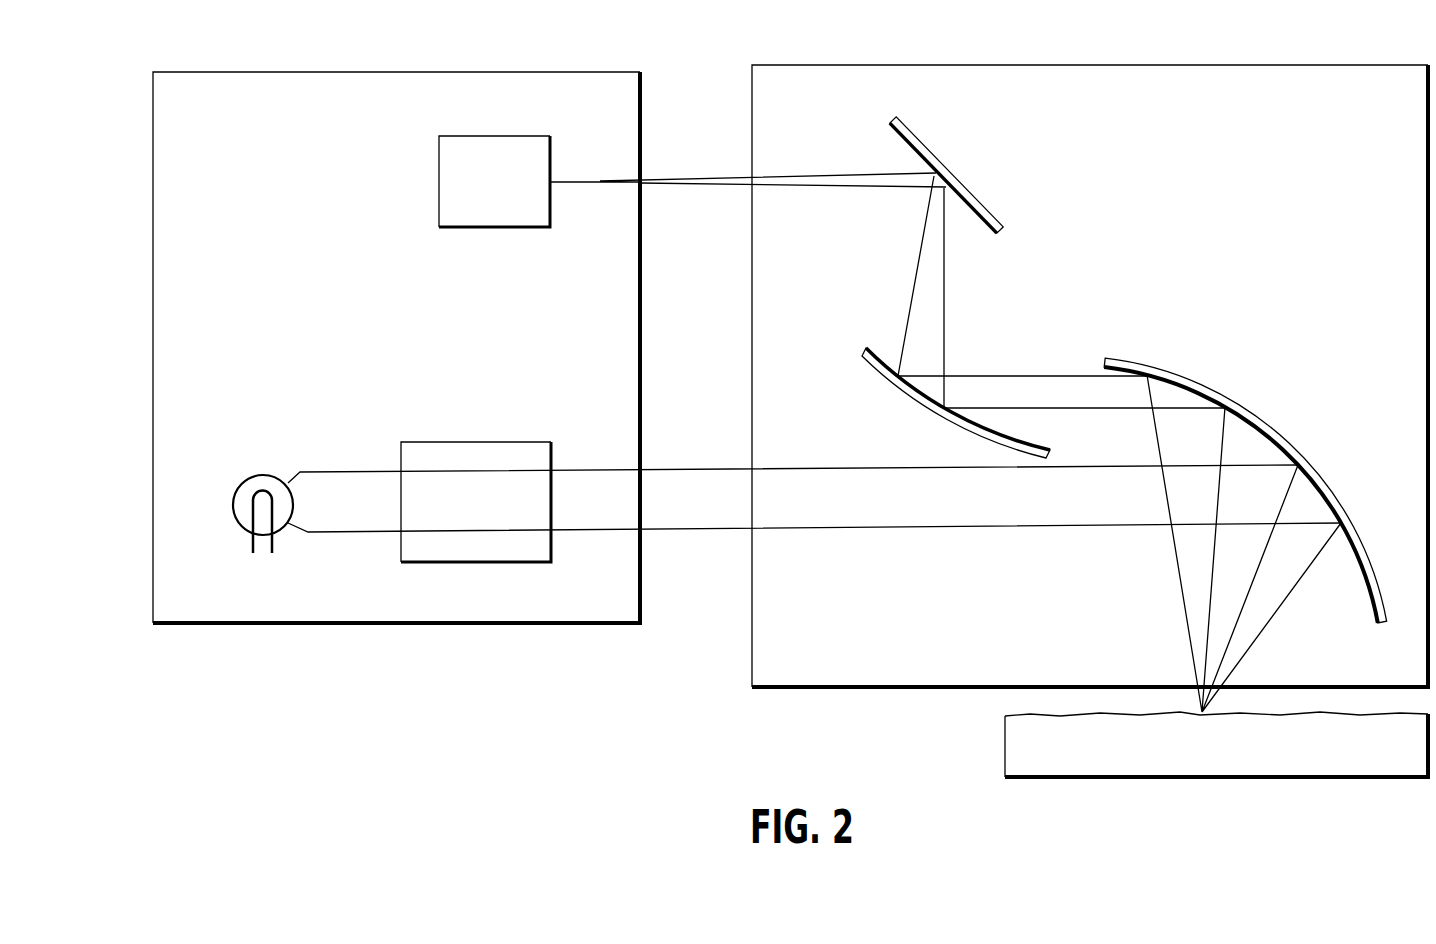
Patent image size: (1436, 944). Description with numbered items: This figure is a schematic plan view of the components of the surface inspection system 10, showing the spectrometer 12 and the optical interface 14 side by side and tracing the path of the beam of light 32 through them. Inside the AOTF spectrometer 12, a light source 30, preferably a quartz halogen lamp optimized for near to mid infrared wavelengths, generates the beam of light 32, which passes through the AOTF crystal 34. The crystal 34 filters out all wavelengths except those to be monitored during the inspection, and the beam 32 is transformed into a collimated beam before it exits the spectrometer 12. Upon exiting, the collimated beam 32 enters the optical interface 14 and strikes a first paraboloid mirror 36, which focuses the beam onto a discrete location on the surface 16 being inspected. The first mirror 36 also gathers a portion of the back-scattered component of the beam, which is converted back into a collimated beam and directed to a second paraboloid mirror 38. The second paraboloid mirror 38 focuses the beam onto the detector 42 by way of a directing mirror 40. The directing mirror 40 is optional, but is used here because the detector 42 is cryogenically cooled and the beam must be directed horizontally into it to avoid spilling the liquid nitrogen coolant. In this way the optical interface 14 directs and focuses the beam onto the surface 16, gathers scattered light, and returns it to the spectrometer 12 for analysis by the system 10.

The system for inspecting a surface for contamination 10 is at (588, 748).
The AOTF spectrometer 12 is at (277, 112).
The optical interface 14 is at (1288, 74).
The surface 16 is at (1308, 755).
The light source 30 is at (237, 512).
The beam of light 32 is at (933, 499).
The AOTF crystal 34 is at (502, 548).
The first paraboloid mirror 36 is at (1247, 405).
The second paraboloid mirror 38 is at (918, 405).
The directing mirror 40 is at (957, 180).
The detector 42 is at (481, 196).